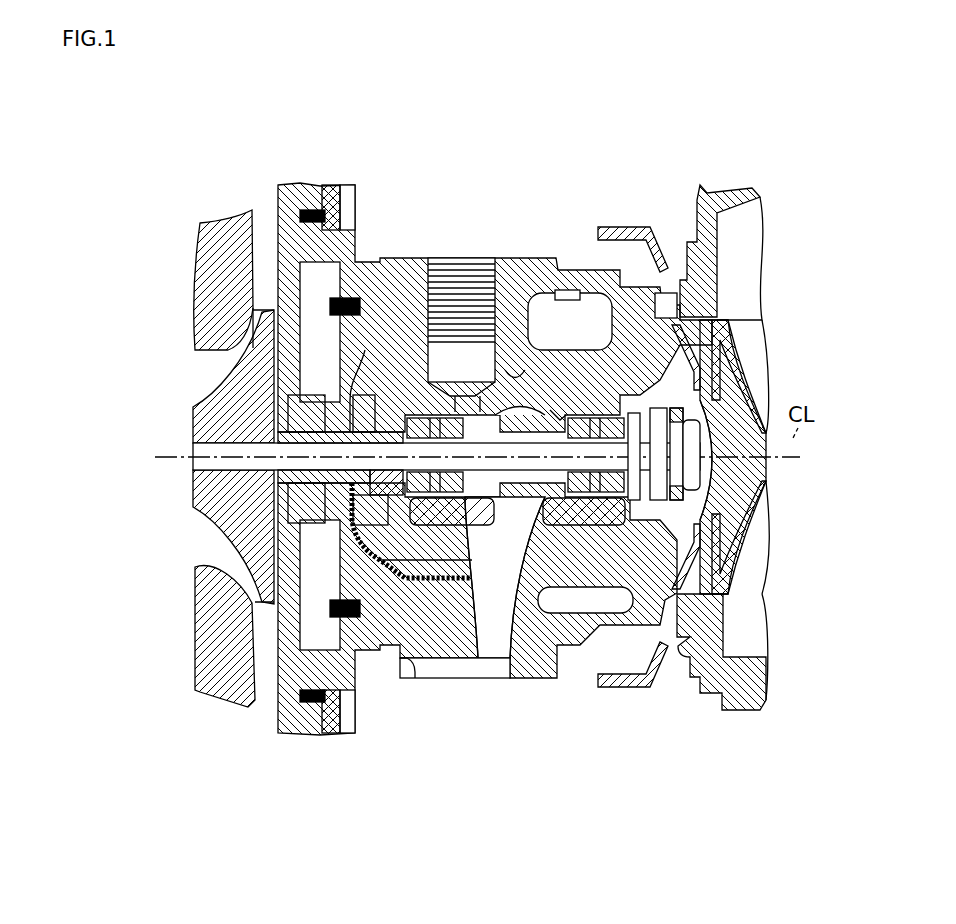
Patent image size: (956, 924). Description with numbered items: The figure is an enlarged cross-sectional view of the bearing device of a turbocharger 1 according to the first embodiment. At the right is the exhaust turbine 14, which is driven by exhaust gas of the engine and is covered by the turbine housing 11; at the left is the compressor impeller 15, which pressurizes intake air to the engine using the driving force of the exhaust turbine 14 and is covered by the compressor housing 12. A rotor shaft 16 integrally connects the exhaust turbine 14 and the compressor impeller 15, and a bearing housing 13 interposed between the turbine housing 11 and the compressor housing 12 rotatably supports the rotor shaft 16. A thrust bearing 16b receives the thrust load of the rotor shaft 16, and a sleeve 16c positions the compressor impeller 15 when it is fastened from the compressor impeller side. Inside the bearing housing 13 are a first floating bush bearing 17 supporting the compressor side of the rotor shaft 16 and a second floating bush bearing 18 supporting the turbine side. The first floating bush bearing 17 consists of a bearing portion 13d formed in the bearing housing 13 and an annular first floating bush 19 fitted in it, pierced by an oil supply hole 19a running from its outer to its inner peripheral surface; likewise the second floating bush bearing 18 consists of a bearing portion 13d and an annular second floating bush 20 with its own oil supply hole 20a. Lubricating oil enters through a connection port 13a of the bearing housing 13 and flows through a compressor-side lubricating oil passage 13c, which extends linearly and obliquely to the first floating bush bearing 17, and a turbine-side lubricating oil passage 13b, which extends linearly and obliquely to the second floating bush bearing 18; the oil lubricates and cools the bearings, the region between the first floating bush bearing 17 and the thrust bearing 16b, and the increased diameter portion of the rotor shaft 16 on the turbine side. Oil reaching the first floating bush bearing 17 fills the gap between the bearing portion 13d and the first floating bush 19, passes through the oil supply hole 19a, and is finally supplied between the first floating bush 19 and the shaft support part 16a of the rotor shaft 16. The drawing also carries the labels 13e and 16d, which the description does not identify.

The turbocharger 1 is at (548, 180).
The turbine housing 11 is at (729, 163).
The compressor housing 12 is at (244, 200).
The bearing housing 13 is at (402, 255).
The connection port 13a is at (438, 295).
The turbine-side lubricating oil passage 13b is at (518, 370).
The compressor-side lubricating oil passage 13c is at (462, 398).
The bearing portion 13d is at (473, 528).
The oil drain flange 13e is at (416, 680).
The exhaust turbine 14 is at (727, 385).
The compressor impeller 15 is at (237, 357).
The rotor shaft 16 is at (200, 468).
The shaft support part 16a is at (557, 420).
The thrust bearing 16b is at (422, 580).
The sleeve 16c is at (400, 545).
The turbine wheel 16d is at (655, 532).
The first floating bush bearing 17 is at (476, 560).
The second floating bush bearing 18 is at (544, 535).
The first floating bush 19 is at (492, 525).
The oil supply hole 19a is at (437, 492).
The second floating bush 20 is at (528, 482).
The oil supply hole 20a is at (598, 492).